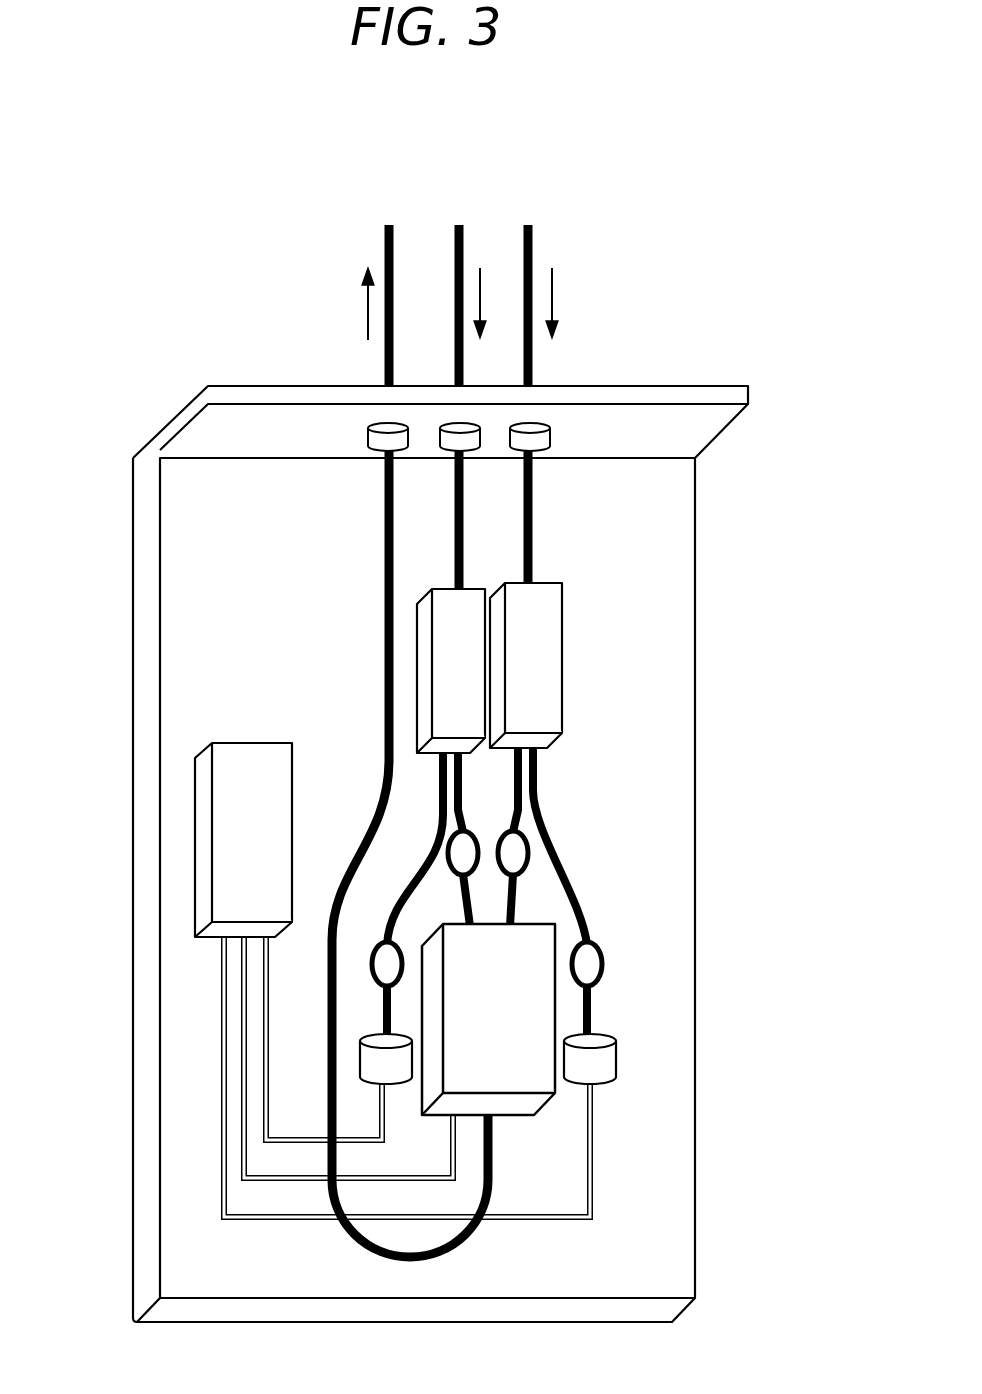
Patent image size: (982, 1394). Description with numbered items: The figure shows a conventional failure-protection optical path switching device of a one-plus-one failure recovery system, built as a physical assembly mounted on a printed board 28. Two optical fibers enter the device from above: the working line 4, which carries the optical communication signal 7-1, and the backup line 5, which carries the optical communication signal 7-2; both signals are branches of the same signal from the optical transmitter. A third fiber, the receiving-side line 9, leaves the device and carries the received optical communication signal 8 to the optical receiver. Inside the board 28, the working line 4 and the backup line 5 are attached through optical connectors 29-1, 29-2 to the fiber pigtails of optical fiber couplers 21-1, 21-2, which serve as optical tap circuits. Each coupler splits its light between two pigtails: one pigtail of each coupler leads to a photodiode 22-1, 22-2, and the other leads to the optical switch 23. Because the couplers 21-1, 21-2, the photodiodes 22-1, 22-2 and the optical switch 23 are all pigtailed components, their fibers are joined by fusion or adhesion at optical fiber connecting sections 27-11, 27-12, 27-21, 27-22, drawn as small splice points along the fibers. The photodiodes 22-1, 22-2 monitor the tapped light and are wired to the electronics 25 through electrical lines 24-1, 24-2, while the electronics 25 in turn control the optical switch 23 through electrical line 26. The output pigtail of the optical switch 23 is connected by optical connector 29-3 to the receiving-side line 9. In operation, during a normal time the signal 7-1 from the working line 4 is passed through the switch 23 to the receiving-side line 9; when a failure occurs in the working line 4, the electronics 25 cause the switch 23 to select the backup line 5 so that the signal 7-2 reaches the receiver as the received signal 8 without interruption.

The working line 4 is at (535, 237).
The backup line 5 is at (455, 237).
The optical communication signal for the working line 7-1 is at (554, 295).
The optical communication signal for the backup line 7-2 is at (480, 284).
The received optical communication signal 8 is at (366, 311).
The receiving-side line 9 is at (385, 237).
The optical fiber coupler 21-1 is at (538, 630).
The optical fiber coupler 21-2 is at (447, 624).
The photodiode 22-1 is at (605, 1038).
The photodiode 22-2 is at (368, 1056).
The optical switch 23 is at (527, 1083).
The electrical line 24-1 is at (547, 1219).
The electrical line 24-2 is at (297, 1144).
The electronics 25 is at (247, 760).
The electrical line 26 is at (243, 1146).
The optical fiber connecting section 27-11 is at (596, 945).
The optical fiber connecting section 27-12 is at (531, 840).
The optical fiber connecting section 27-21 is at (381, 943).
The optical fiber connecting section 27-22 is at (449, 838).
The printed board 28 is at (176, 537).
The optical connector 29-1 is at (548, 444).
The optical connector 29-2 is at (476, 443).
The optical connector 29-3 is at (372, 444).